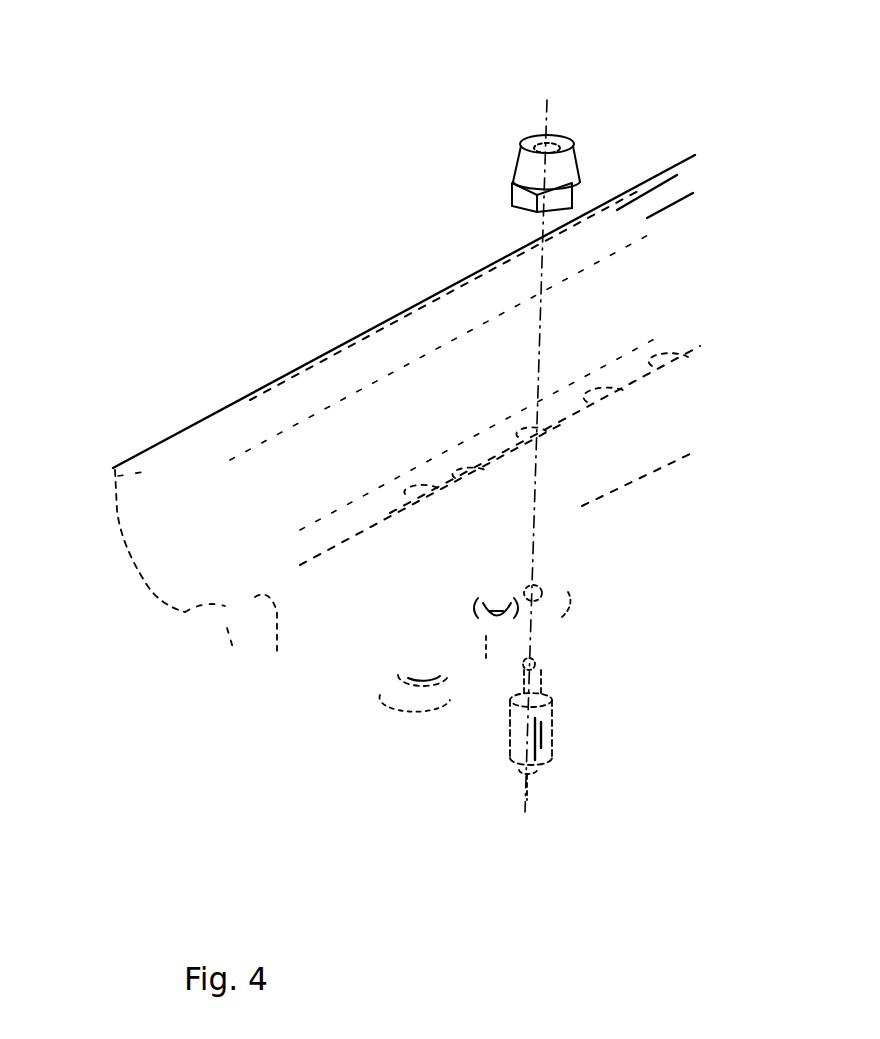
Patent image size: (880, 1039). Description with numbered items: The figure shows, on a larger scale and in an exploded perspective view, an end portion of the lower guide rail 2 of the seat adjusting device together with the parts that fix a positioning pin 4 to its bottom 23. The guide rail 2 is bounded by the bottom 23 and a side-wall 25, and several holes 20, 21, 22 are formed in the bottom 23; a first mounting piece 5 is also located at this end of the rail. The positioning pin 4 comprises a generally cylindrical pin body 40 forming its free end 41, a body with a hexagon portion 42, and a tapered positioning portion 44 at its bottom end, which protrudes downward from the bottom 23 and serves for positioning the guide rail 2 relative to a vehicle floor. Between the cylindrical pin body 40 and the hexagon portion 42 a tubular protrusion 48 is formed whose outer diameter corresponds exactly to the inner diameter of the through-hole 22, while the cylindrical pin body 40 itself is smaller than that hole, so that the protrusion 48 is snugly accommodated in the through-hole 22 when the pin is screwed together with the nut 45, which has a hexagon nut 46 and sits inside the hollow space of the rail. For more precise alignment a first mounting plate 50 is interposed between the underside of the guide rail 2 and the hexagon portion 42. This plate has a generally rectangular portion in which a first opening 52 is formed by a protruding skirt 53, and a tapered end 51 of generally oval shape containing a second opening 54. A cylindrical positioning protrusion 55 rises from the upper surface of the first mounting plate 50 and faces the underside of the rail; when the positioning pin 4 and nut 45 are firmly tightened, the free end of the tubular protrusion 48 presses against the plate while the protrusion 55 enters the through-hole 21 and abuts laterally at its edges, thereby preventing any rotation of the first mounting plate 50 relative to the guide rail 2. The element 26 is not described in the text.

The guide rail 2 is at (243, 395).
The positioning pin 4 is at (550, 772).
The first mounting piece 5 is at (413, 703).
The hole in lower rail 20 is at (406, 492).
The through-hole 21 is at (470, 473).
The through-hole 22 is at (532, 433).
The bottom of guide rail 23 is at (207, 595).
The side-wall of lower rail 25 is at (120, 523).
The web 26 is at (283, 628).
The cylindrical pin body 40 is at (537, 692).
The free end of cylindrical pin body 41 is at (533, 663).
The hexagon portion 42 is at (540, 740).
The positioning portion 44 is at (520, 770).
The nut 45 is at (578, 162).
The hexagon nut 46 is at (513, 193).
The tubular protrusion 48 is at (532, 717).
The first mounting plate 50 is at (483, 648).
The tapered end of first mounting plate 51 is at (570, 585).
The first opening 52 is at (418, 658).
The skirt 53 is at (378, 657).
The second opening 54 is at (541, 592).
The positioning protrusion 55 is at (498, 602).